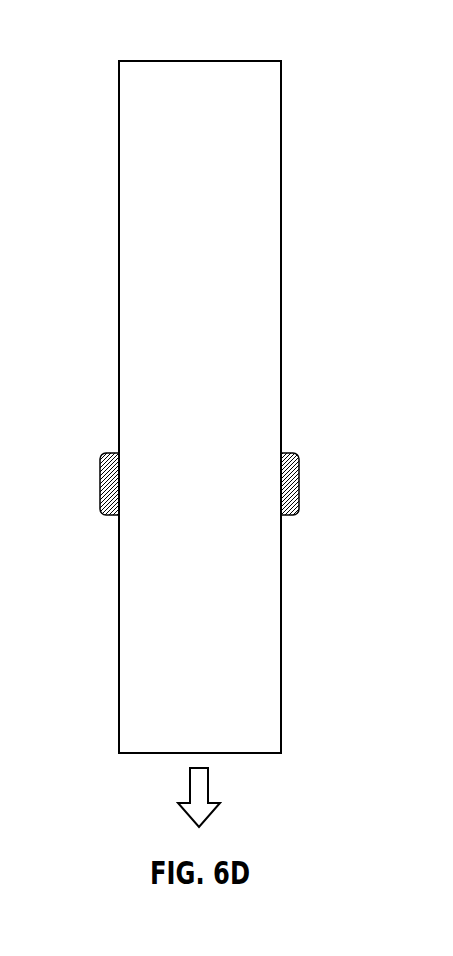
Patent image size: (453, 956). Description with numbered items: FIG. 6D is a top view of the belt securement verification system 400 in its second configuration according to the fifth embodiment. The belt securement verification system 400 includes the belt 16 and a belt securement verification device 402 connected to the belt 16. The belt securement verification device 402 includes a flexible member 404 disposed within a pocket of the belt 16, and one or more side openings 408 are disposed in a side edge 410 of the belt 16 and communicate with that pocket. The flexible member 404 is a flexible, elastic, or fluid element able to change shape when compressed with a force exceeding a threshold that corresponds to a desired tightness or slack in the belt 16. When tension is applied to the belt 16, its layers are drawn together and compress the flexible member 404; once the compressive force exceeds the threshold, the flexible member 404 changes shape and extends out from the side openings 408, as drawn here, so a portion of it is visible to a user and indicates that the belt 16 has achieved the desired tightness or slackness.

The belt securement verification system 400 is at (150, 46).
The belt 16 is at (272, 131).
The side edge 410 is at (119, 243).
The side openings 408 is at (104, 460).
The belt securement verification device 402 is at (318, 486).
The flexible member 404 is at (296, 505).